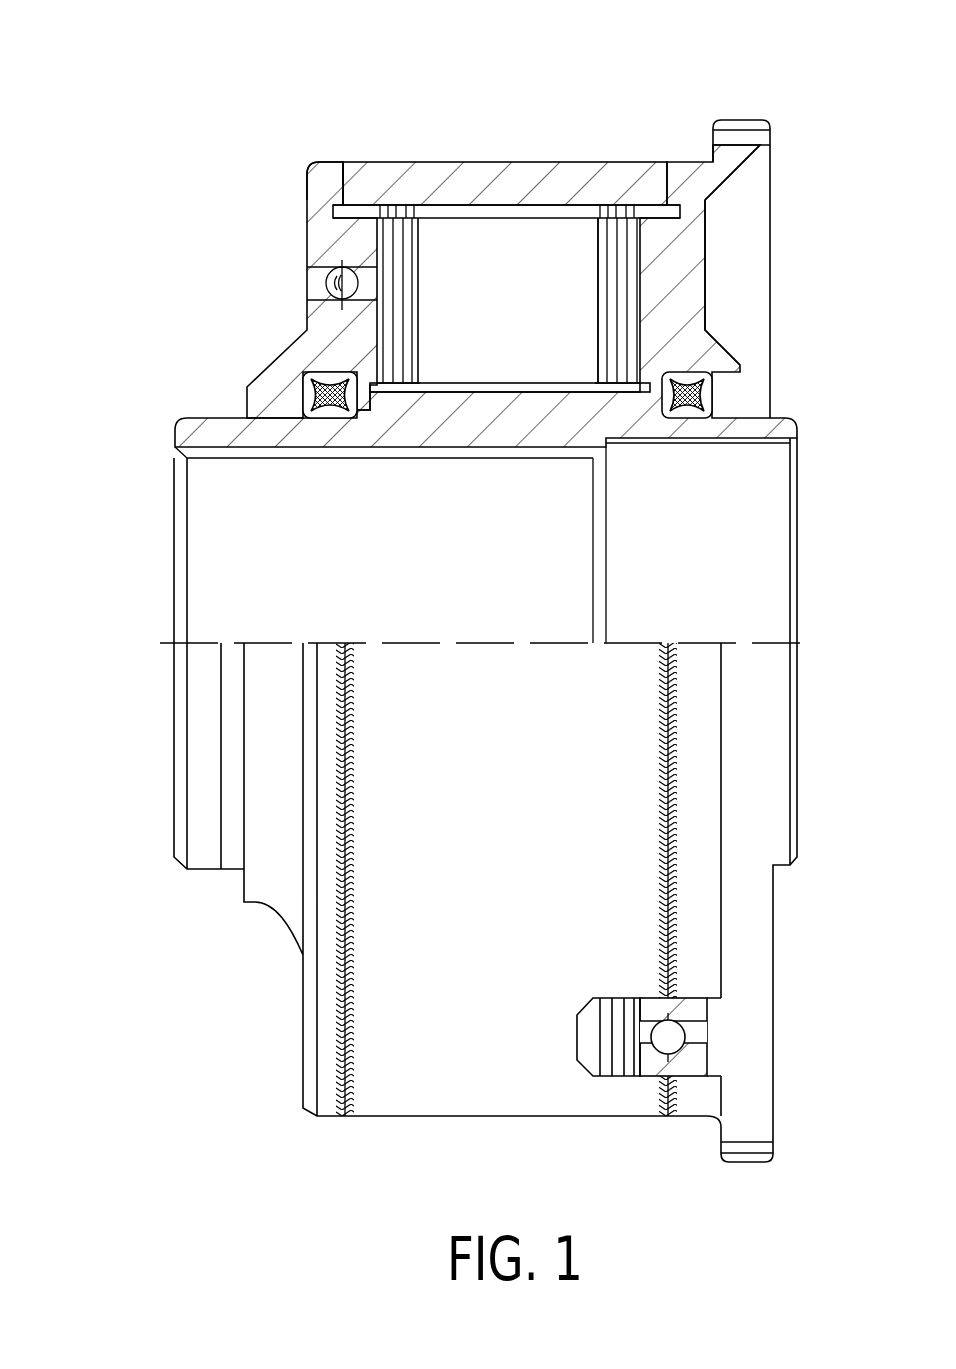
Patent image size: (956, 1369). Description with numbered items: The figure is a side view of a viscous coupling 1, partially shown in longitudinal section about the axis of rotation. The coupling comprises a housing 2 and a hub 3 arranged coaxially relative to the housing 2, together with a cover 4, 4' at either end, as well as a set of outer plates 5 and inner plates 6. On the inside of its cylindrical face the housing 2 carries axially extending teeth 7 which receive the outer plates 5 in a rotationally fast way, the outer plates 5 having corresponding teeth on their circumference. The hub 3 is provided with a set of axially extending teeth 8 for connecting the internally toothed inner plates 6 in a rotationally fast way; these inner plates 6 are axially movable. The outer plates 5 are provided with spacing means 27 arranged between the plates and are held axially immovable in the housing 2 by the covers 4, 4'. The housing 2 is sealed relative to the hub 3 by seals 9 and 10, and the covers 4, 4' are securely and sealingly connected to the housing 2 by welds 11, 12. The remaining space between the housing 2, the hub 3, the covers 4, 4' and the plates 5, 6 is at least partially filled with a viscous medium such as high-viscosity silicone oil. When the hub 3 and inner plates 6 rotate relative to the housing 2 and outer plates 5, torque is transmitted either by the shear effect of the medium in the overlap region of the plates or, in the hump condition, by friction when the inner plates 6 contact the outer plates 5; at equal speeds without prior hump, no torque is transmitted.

The viscous coupling 1 is at (501, 36).
The housing 2 is at (510, 172).
The hub 3 is at (644, 432).
The cover 4 is at (308, 290).
The cover 4' is at (767, 281).
The outer plates 5 is at (597, 345).
The inner plates 6 is at (417, 225).
The axially extending teeth 7 is at (547, 210).
The axially extending teeth 8 is at (498, 383).
The seal 9 is at (333, 417).
The seal 10 is at (685, 410).
The weld 11 is at (344, 178).
The weld 12 is at (672, 162).
The spacing means 27 is at (600, 205).